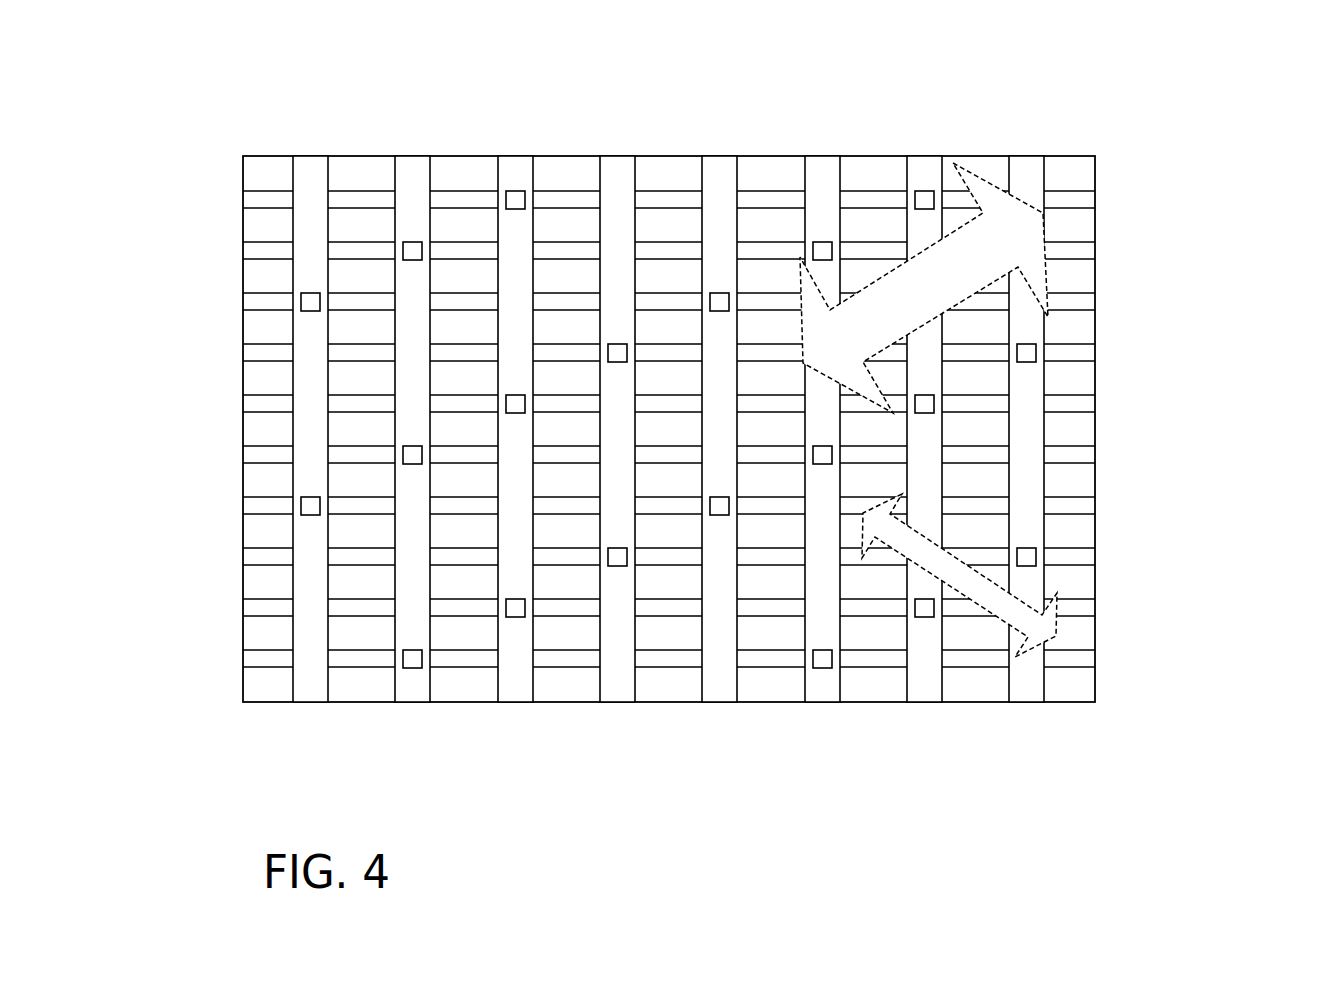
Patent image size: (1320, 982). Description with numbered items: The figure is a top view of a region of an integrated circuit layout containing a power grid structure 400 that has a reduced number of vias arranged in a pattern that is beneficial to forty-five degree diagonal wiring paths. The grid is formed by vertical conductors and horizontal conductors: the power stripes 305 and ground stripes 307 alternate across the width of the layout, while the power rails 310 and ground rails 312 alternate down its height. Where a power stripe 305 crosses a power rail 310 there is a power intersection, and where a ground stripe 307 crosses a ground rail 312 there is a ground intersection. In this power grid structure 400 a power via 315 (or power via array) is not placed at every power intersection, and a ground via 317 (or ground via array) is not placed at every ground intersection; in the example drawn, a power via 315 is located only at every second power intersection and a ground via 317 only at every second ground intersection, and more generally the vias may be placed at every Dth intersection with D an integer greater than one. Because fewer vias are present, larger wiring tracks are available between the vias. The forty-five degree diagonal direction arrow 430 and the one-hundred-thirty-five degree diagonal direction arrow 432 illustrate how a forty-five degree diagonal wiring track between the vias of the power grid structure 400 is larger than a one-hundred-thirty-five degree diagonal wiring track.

The power grid structure 400 is at (724, 358).
The power stripe 305 is at (313, 156).
The ground stripe 307 is at (409, 156).
The power rail 310 is at (243, 198).
The ground rail 312 is at (243, 256).
The power via 315 is at (312, 293).
The ground via 317 is at (412, 260).
The 45° diagonal direction arrow 430 is at (1020, 200).
The 135° diagonal direction arrow 432 is at (997, 585).